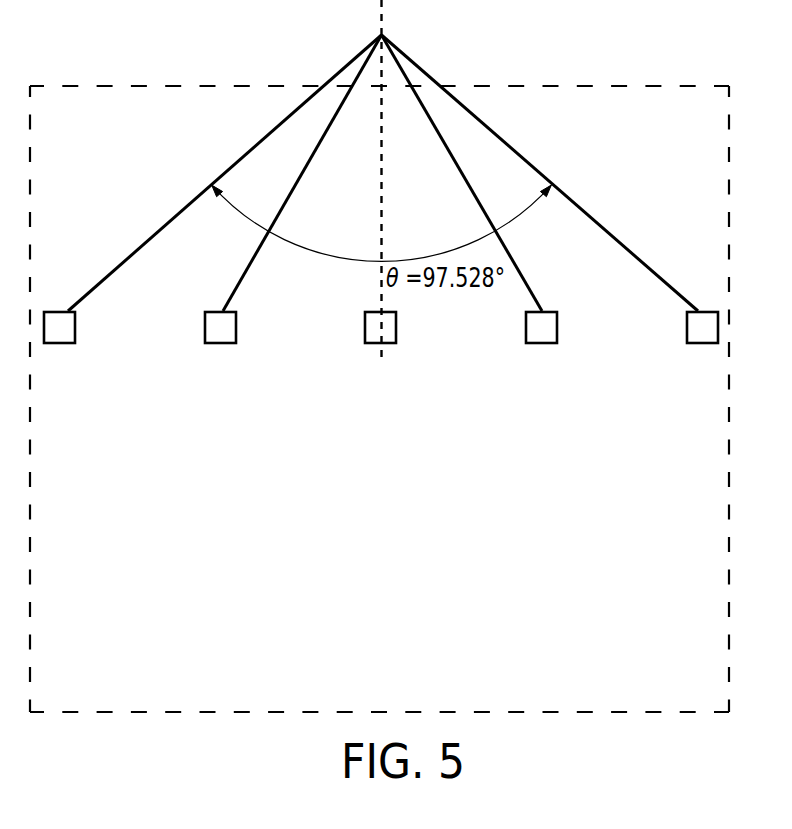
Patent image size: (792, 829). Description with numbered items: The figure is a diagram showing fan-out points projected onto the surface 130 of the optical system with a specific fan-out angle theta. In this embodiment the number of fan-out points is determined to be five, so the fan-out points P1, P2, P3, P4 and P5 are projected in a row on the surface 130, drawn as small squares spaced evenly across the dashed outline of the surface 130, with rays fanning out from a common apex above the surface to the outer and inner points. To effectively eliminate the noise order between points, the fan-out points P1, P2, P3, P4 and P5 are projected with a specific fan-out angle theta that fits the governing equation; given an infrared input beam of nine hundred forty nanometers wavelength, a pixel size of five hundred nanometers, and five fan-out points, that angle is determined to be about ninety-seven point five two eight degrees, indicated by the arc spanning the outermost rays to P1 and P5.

The surface 130 is at (686, 86).
The fan-out point P1 is at (59, 351).
The fan-out point P2 is at (221, 351).
The fan-out point P3 is at (381, 351).
The fan-out point P4 is at (542, 351).
The fan-out point P5 is at (703, 351).